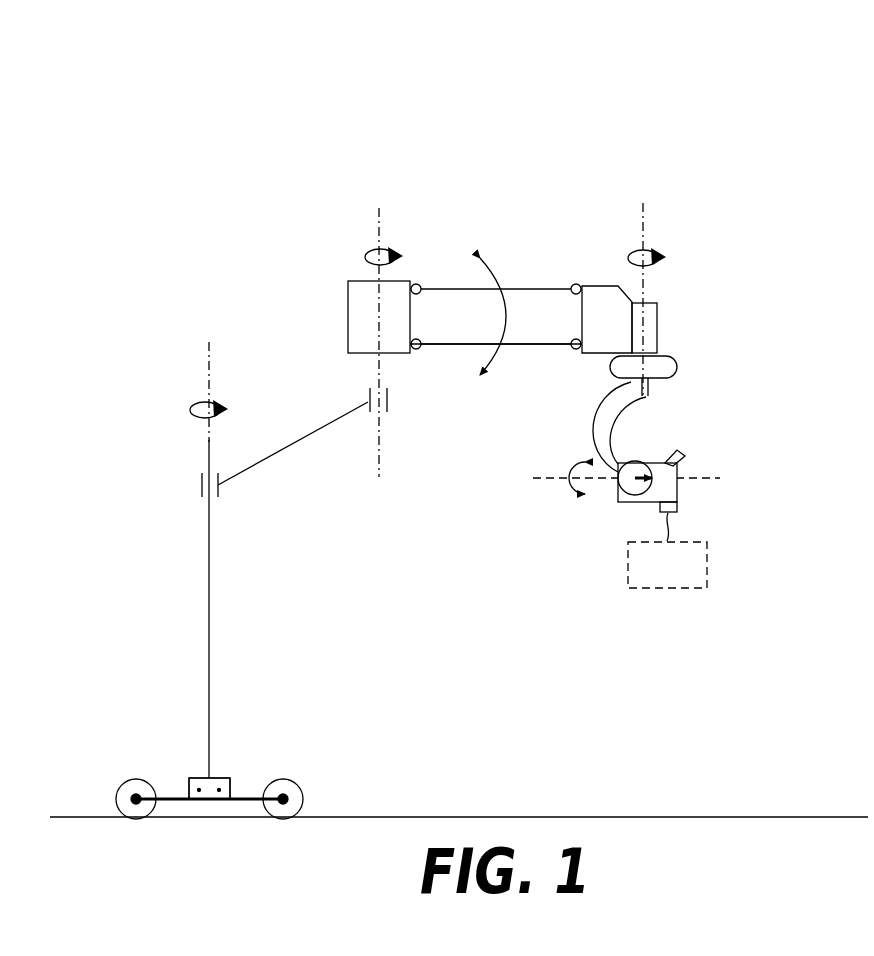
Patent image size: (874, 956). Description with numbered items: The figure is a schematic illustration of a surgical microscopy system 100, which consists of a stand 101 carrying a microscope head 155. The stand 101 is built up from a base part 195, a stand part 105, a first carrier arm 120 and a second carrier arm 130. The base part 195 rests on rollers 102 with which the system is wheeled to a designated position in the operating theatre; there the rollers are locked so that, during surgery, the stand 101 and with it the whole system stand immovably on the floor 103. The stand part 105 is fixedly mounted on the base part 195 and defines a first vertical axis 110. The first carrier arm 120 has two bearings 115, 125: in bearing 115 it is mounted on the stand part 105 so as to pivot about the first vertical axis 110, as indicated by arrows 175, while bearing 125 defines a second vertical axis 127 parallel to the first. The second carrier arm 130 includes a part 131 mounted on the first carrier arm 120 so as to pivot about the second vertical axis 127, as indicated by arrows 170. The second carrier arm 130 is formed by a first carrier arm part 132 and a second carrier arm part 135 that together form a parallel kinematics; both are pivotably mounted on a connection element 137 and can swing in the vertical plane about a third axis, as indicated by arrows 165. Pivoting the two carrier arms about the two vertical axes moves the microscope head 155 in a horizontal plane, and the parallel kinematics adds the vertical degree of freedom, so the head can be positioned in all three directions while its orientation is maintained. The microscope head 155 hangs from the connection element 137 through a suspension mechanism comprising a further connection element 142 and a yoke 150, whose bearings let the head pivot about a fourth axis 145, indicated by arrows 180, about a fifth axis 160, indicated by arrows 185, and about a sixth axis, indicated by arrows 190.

The surgical microscopy system 100 is at (832, 138).
The stand 101 is at (196, 262).
The rollers 102 is at (137, 780).
The floor 103 is at (428, 817).
The stand part 105 is at (209, 628).
The first vertical axis 110 is at (209, 348).
The bearing 115 is at (200, 486).
The first carrier arm 120 is at (276, 455).
The bearing 125 is at (390, 398).
The second vertical axis 127 is at (379, 216).
The second carrier arm 130 is at (519, 226).
The part 131 is at (348, 325).
The first carrier arm part 132 is at (534, 289).
The second carrier arm part 135 is at (522, 345).
The connection element 137 is at (588, 286).
The connection element 142 is at (657, 336).
The fourth axis 145 is at (643, 214).
The yoke 150 is at (650, 434).
The microscope head 155 is at (677, 483).
The fifth axis 160 is at (545, 478).
The arrows 165 is at (488, 268).
The arrows 170 is at (366, 256).
The arrows 175 is at (196, 410).
The arrows 180 is at (660, 258).
The arrows 185 is at (584, 495).
The arrows 190 is at (618, 503).
The base part 195 is at (240, 797).